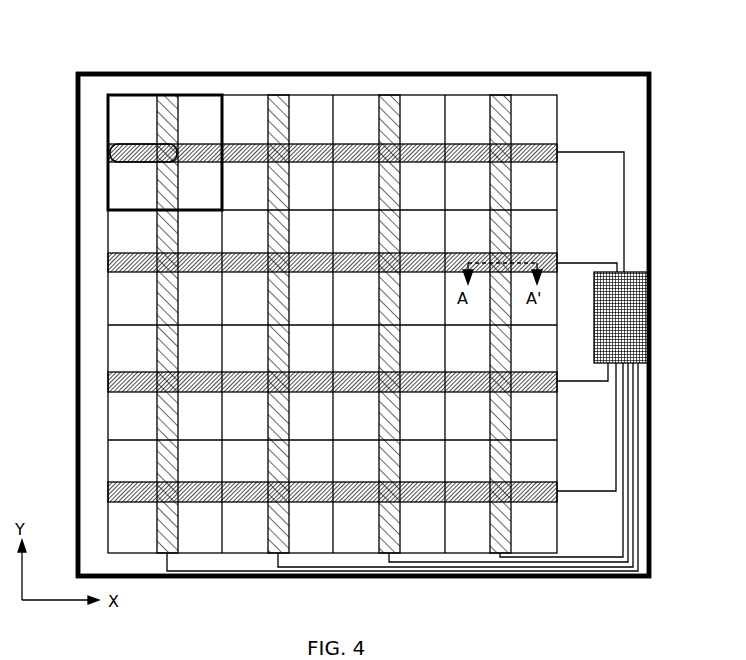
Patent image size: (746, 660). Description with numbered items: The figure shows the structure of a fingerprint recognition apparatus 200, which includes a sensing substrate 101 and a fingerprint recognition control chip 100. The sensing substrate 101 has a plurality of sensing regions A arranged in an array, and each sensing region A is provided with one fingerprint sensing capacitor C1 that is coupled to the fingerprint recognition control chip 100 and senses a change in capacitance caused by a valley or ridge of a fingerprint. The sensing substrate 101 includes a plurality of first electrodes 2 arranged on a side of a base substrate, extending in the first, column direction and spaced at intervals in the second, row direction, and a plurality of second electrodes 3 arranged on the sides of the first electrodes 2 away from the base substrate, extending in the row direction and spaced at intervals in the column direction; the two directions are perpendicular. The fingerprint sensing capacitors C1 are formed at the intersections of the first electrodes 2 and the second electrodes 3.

The fingerprint recognition apparatus 200 is at (118, 24).
The sensing substrate 101 is at (635, 197).
The fingerprint recognition control chip 100 is at (648, 322).
The second electrode 3 is at (108, 263).
The first electrode 2 is at (157, 357).
The fingerprint sensing capacitor C1 is at (108, 156).
The sensing region A is at (108, 128).